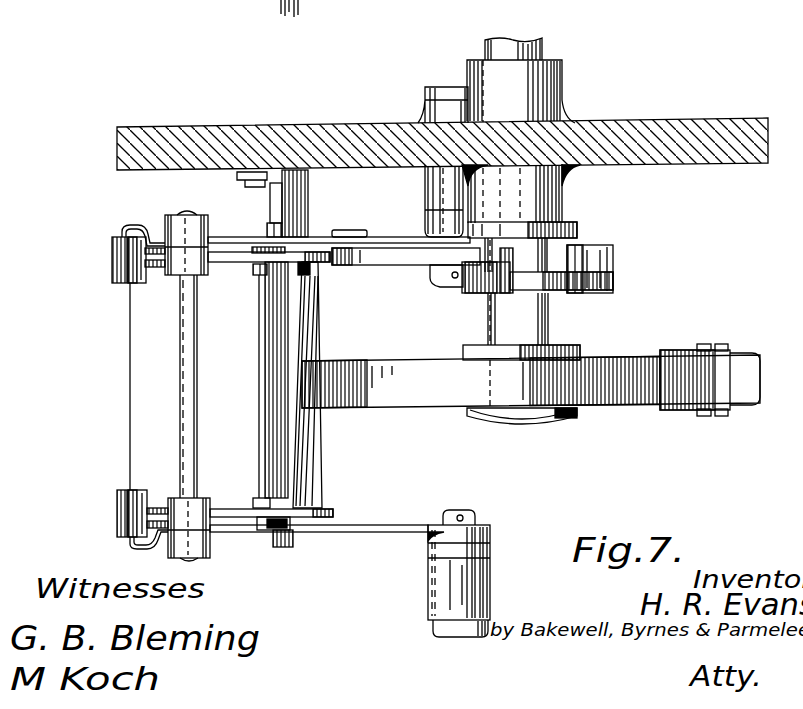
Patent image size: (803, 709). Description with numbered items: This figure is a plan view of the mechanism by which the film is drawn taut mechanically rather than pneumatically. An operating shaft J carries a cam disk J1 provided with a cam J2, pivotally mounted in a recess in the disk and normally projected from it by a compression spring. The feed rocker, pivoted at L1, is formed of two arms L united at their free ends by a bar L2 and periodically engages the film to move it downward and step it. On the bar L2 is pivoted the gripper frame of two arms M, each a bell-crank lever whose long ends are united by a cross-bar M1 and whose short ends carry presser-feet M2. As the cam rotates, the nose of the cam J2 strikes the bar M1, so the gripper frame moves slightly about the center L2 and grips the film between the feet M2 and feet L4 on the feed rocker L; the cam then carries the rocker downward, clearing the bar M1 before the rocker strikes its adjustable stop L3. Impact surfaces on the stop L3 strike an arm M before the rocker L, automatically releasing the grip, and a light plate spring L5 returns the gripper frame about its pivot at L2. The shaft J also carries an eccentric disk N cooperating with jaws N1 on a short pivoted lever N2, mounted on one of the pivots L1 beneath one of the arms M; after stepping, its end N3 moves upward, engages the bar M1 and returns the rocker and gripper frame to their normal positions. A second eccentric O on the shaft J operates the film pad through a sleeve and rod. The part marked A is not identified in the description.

The spindle axis A is at (130, 387).
The operating shaft J is at (507, 325).
The cam disk J1 is at (632, 380).
The cam J2 is at (752, 375).
The arms of the feed rocker L is at (380, 532).
The pivot L1 is at (450, 277).
The bar L2 is at (190, 452).
The stop L3 is at (264, 397).
The feet L4 is at (125, 507).
The light plate spring L5 is at (265, 528).
The arms of the gripper frame M is at (242, 517).
The cross-bar M1 is at (315, 453).
The presser-feet M2 is at (138, 496).
The eccentric disk N is at (600, 275).
The jaws N1 is at (488, 283).
The short pivoted lever N2 is at (398, 257).
The end of the rocking lever N3 is at (352, 230).
The second eccentric O is at (577, 228).